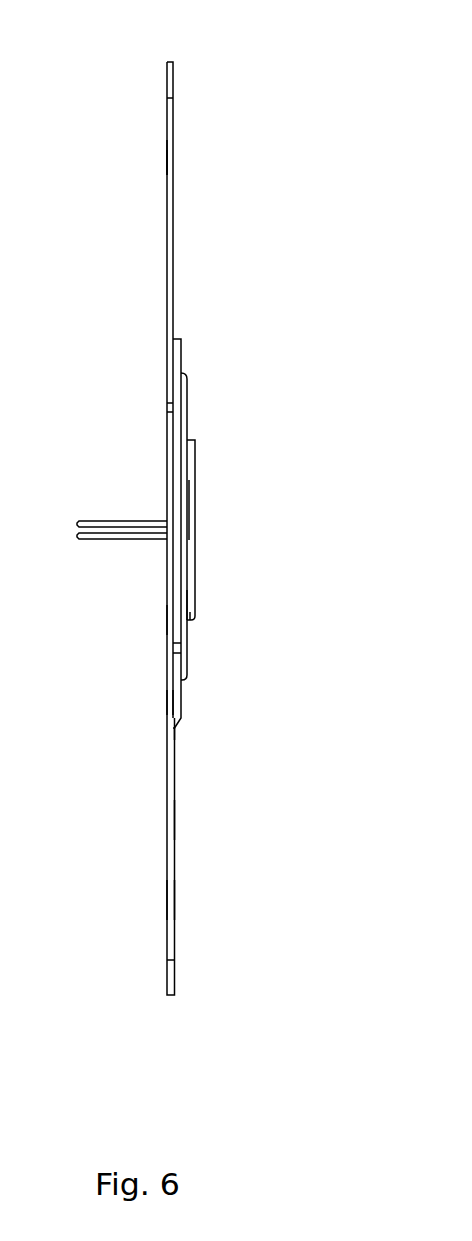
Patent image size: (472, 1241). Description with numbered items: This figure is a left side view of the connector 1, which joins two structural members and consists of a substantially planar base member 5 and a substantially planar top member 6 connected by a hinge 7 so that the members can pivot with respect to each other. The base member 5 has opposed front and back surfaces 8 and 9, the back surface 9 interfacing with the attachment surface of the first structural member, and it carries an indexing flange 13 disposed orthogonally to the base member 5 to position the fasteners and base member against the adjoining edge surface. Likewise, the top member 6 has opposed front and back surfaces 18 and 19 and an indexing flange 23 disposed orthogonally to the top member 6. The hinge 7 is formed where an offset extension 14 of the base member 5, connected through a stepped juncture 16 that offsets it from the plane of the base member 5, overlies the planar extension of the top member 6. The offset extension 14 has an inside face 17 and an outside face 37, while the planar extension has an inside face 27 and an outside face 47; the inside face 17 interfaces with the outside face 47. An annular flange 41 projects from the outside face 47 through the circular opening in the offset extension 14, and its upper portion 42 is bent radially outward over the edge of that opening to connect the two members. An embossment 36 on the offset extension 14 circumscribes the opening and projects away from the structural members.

The connector 1 is at (170, 63).
The base member 5 is at (174, 817).
The top member 6 is at (173, 227).
The hinge 7 is at (192, 618).
The front surface 8 is at (174, 902).
The back surface 9 is at (167, 902).
The indexing flange 13 is at (77, 539).
The offset extension 14 is at (175, 703).
The stepped juncture 16 is at (177, 724).
The inside face 17 is at (171, 703).
The front surface 18 is at (173, 157).
The back surface 19 is at (167, 160).
The indexing flange 23 is at (77, 521).
The inside face 27 is at (168, 616).
The embossment 36 is at (188, 668).
The outside face 37 is at (182, 358).
The annular flange 41 is at (195, 460).
The upper portion 42 is at (197, 517).
The outside face 47 is at (167, 609).